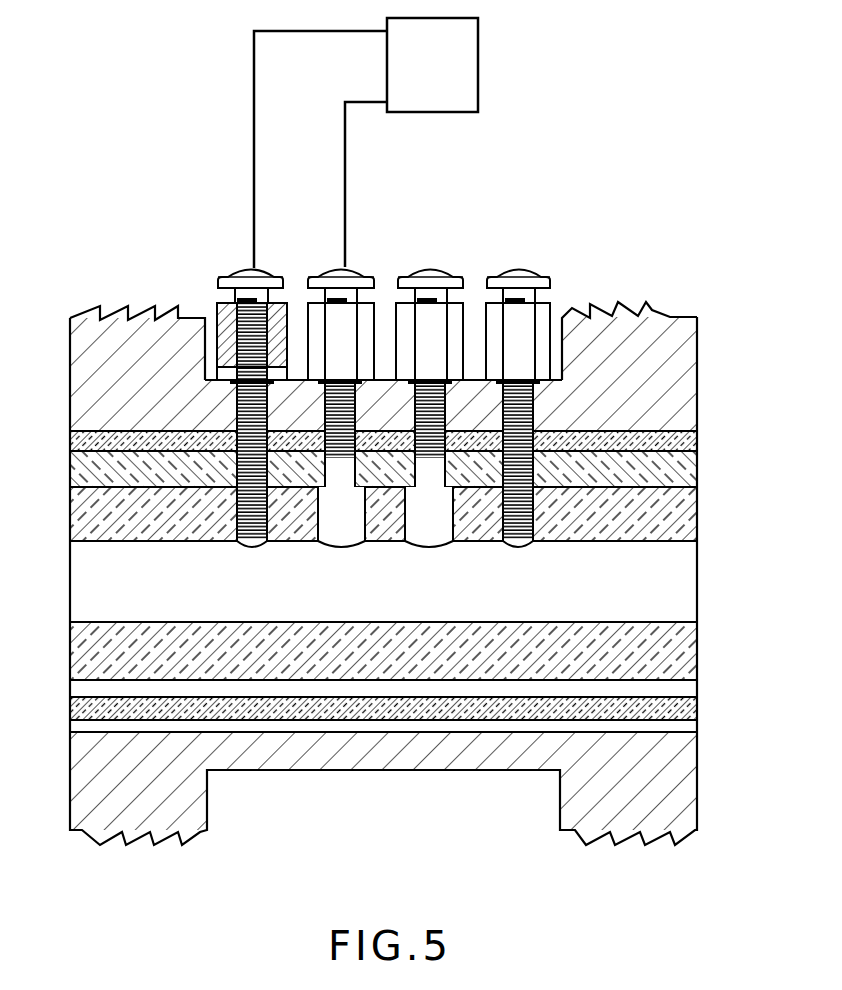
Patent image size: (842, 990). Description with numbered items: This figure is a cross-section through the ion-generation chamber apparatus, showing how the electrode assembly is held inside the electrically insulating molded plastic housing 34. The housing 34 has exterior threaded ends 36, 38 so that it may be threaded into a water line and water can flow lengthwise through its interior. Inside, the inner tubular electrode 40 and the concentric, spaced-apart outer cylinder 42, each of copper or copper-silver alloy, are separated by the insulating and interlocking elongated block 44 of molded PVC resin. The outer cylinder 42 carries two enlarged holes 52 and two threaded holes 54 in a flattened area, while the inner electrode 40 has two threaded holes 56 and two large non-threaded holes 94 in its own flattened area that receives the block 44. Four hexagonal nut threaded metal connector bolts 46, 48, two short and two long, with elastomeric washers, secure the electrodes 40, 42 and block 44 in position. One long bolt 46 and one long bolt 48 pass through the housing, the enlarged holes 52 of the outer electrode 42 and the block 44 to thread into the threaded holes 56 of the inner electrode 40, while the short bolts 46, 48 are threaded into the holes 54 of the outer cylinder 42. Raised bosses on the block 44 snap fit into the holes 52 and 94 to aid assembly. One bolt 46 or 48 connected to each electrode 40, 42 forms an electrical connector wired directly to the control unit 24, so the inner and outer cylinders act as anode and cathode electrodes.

The electronic control unit 24 is at (443, 79).
The housing 34 is at (680, 366).
The exterior threaded end 36 is at (140, 312).
The exterior threaded end 38 is at (628, 306).
The inner tubular electrode 40 is at (685, 513).
The outer cylinder 42 is at (680, 446).
The insulating and interlocking elongated block 44 is at (678, 464).
The connector bolt 46 is at (240, 268).
The connector bolt 48 is at (500, 268).
The enlarged hole 52 is at (236, 447).
The threaded hole 54 is at (358, 428).
The threaded hole 56 is at (266, 523).
The large non-threaded hole 94 is at (427, 537).